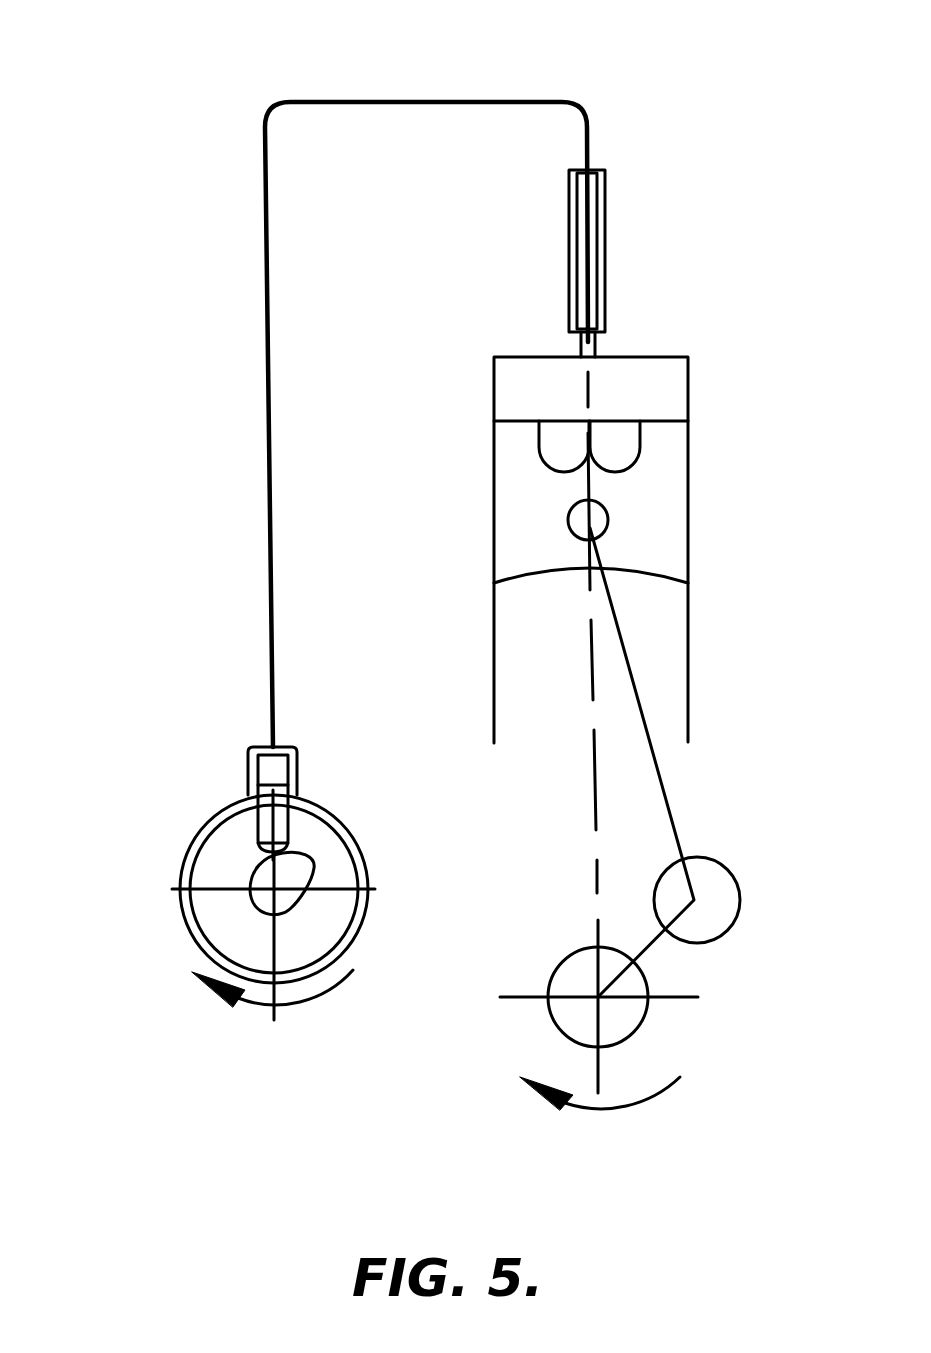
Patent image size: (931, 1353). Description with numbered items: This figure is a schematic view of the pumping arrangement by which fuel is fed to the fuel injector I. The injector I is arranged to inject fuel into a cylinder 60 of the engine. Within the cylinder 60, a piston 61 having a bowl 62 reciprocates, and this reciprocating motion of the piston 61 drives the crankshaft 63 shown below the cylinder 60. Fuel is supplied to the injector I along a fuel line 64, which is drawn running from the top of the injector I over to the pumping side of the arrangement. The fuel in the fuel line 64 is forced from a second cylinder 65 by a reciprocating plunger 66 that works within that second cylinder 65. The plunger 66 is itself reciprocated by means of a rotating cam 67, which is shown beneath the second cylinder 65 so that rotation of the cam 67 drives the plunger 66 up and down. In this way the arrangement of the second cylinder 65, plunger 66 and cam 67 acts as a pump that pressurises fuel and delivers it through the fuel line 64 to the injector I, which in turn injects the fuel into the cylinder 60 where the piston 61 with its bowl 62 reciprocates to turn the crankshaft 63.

The fuel line 64 is at (581, 109).
The injector I is at (605, 248).
The cylinder 60 is at (690, 383).
The piston 61 is at (673, 503).
The bowl 62 is at (613, 445).
The crankshaft 63 is at (557, 1023).
The second cylinder 65 is at (277, 770).
The plunger 66 is at (265, 805).
The cam 67 is at (263, 905).